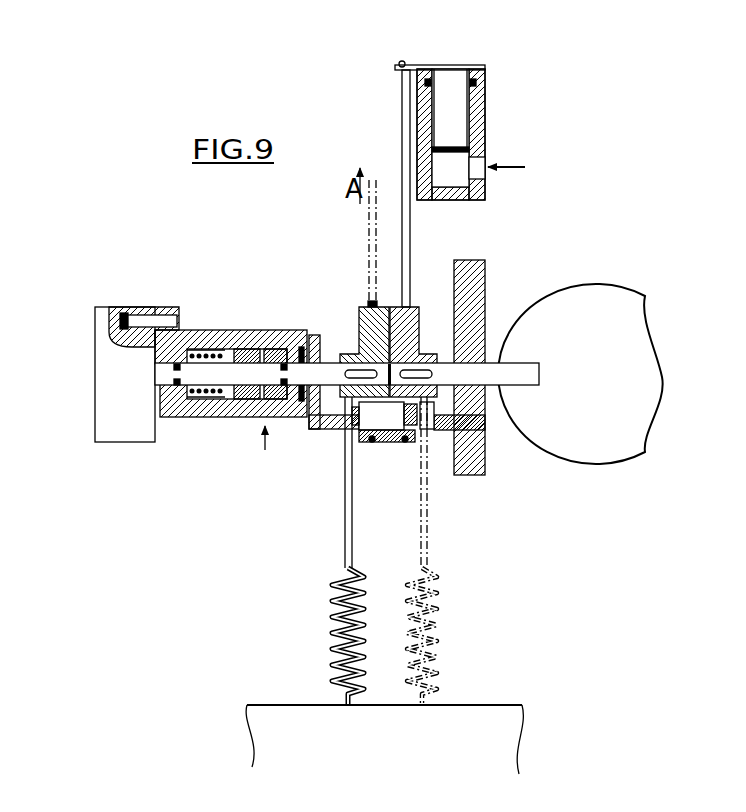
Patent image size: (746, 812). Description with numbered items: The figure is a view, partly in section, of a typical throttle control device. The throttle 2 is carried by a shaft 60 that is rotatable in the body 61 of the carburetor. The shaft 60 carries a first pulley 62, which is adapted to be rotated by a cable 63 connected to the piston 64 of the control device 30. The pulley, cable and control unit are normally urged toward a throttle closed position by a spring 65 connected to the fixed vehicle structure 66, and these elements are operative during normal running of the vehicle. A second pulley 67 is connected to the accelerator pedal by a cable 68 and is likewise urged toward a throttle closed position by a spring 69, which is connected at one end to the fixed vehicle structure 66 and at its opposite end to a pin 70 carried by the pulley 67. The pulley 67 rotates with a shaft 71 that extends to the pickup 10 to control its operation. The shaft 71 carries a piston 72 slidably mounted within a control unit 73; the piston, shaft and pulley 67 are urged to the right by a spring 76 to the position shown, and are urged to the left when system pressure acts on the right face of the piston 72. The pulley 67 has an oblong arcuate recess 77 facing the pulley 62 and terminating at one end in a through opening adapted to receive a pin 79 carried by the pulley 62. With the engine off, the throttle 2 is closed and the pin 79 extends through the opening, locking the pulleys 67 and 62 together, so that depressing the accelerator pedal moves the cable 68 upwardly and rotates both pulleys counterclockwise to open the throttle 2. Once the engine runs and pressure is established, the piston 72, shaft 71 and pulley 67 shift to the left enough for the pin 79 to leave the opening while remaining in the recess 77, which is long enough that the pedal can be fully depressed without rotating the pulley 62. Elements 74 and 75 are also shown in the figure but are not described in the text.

The throttle 2 is at (578, 320).
The pickup 10 is at (113, 410).
The control device 30 is at (473, 128).
The shaft 60 is at (489, 376).
The body of the carburetor 61 is at (470, 270).
The first pulley 62 is at (438, 301).
The cable 63 is at (404, 236).
The piston 64 is at (443, 104).
The spring 65 is at (440, 623).
The fixed vehicle structure 66 is at (472, 730).
The second pulley 67 is at (358, 318).
The cable 68 is at (370, 230).
The spring 69 is at (326, 630).
The pin 70 is at (379, 441).
The shaft 71 is at (295, 372).
The piston 72 is at (252, 347).
The control unit 73 is at (212, 335).
The bracket 74 is at (316, 428).
The bushing 75 is at (230, 404).
The spring 76 is at (193, 400).
The recess 77 is at (387, 410).
The pin 79 is at (420, 443).